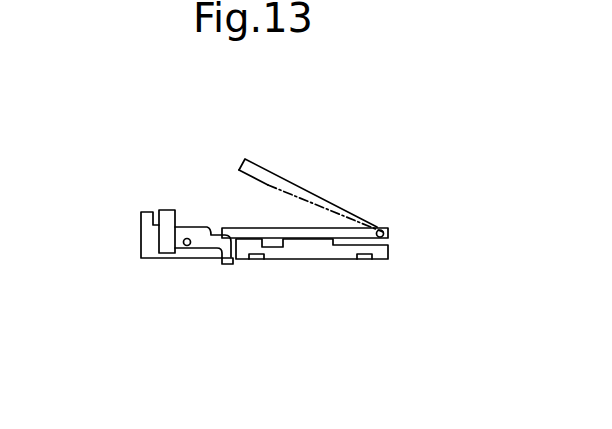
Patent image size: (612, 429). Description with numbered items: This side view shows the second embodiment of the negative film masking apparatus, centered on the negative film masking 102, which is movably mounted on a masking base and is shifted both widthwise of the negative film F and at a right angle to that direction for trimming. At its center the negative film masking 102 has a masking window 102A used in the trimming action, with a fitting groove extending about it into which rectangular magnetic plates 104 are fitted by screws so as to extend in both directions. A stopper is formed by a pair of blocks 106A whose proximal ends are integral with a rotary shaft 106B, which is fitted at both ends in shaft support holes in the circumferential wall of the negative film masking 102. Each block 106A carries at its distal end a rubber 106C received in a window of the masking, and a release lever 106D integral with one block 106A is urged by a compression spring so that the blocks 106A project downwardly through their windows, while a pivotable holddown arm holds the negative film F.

The negative film masking 102 is at (388, 252).
The masking window 102A is at (288, 229).
The magnetic plates 104 is at (255, 259).
The blocks 106A is at (206, 227).
The rotary shaft 106B is at (180, 250).
The rubber 106C is at (228, 263).
The release lever 106D is at (167, 210).
The negative film F is at (310, 248).